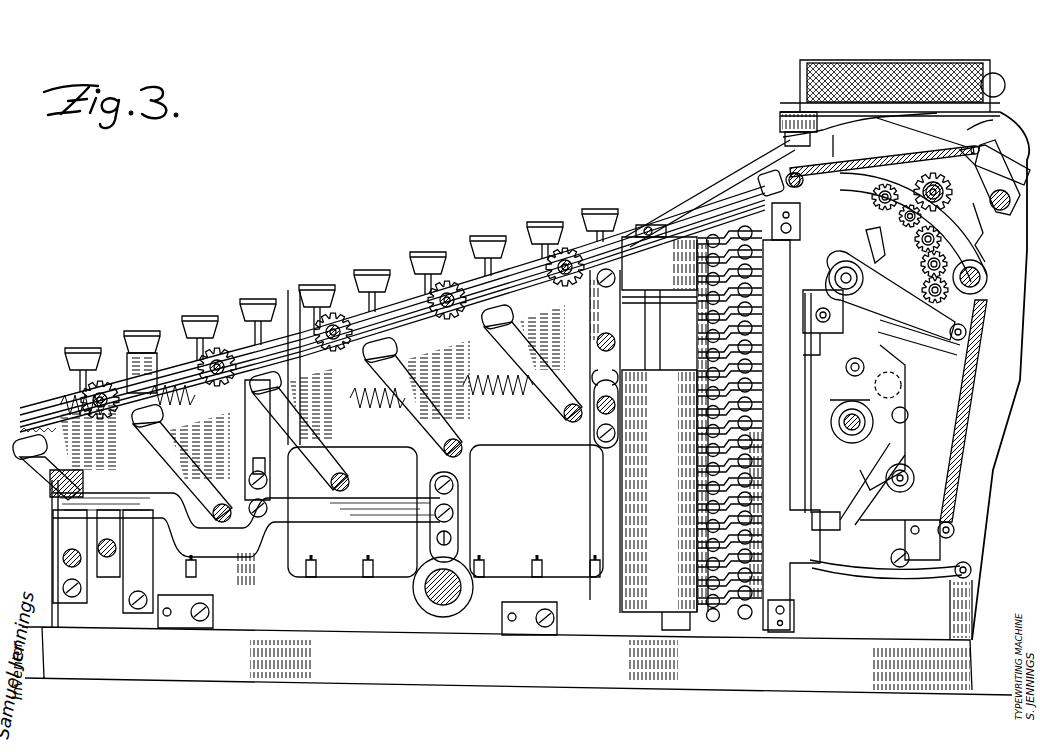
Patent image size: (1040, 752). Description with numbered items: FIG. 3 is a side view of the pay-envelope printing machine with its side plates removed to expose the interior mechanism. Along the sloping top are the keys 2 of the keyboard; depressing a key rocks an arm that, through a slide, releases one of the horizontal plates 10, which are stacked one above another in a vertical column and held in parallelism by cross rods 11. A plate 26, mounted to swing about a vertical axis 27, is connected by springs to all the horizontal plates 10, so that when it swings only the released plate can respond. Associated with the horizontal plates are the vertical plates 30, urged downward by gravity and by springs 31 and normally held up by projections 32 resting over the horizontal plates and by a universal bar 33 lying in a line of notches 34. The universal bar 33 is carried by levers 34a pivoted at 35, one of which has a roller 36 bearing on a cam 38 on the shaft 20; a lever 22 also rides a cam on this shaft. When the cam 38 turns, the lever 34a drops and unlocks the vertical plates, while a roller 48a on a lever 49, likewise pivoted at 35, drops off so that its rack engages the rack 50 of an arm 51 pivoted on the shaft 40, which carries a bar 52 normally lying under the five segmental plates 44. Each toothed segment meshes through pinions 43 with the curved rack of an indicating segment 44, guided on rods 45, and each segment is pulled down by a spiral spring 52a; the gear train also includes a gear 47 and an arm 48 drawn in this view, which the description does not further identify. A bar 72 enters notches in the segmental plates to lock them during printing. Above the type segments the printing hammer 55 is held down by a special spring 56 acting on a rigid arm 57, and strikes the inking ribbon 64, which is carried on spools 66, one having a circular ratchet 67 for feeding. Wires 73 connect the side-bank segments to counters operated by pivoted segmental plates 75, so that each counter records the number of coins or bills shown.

The key 2 is at (372, 267).
The wire 73 is at (512, 262).
The pivoted segmental plate 75 is at (318, 368).
The vertical axis 27 is at (640, 225).
The plate 26 is at (659, 433).
The cross rod 11 is at (750, 440).
The horizontal plate 10 is at (727, 445).
The projection 32 is at (764, 250).
The vertical plate 30 is at (784, 435).
The notch 34 is at (802, 541).
The lever 34a is at (822, 508).
The universal bar 33 is at (849, 527).
The spring 31 is at (873, 570).
The special spring 56 is at (793, 146).
The spool 66 is at (810, 62).
The inking ribbon 64 is at (926, 76).
The circular ratchet 67 is at (778, 110).
The printing hammer 55 is at (997, 153).
The rigid arm 57 is at (1000, 185).
The segmental plate 44 is at (985, 231).
The guiding rod 45 is at (951, 192).
The gear 47 is at (871, 199).
The pinion 43 is at (915, 248).
The arm 48 is at (866, 231).
The bar 72 is at (988, 283).
The shaft 40 is at (855, 284).
The rack 50 is at (803, 302).
The arm 51 is at (918, 328).
The bar 52 is at (958, 341).
The roller 36 is at (898, 378).
The roller 48a is at (890, 413).
The lever 49 is at (907, 443).
The cam 38 is at (840, 417).
The shaft 20 is at (850, 428).
The lever 22 is at (885, 447).
The pivot 35 is at (914, 477).
The spiral spring 52a is at (947, 520).